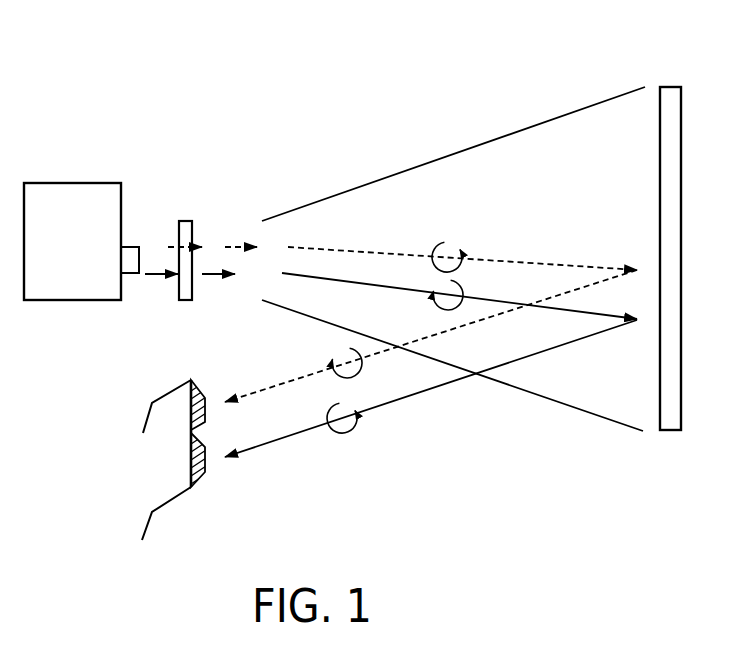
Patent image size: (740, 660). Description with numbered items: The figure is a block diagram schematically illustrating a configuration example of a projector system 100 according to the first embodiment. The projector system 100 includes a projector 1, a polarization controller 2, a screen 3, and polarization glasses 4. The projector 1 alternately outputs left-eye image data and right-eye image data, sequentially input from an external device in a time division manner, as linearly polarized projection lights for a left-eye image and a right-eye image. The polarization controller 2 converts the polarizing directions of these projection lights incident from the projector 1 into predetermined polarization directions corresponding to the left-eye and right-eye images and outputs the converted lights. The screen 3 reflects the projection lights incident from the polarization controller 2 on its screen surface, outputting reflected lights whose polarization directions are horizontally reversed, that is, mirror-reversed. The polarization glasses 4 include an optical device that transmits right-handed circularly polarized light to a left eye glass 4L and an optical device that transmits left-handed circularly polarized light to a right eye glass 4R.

The projector system 100 is at (370, 92).
The projector 1 is at (97, 183).
The polarization controller 2 is at (185, 221).
The screen 3 is at (673, 87).
The polarization glasses 4 is at (145, 420).
The left eye glass 4L is at (205, 397).
The right eye glass 4R is at (205, 465).